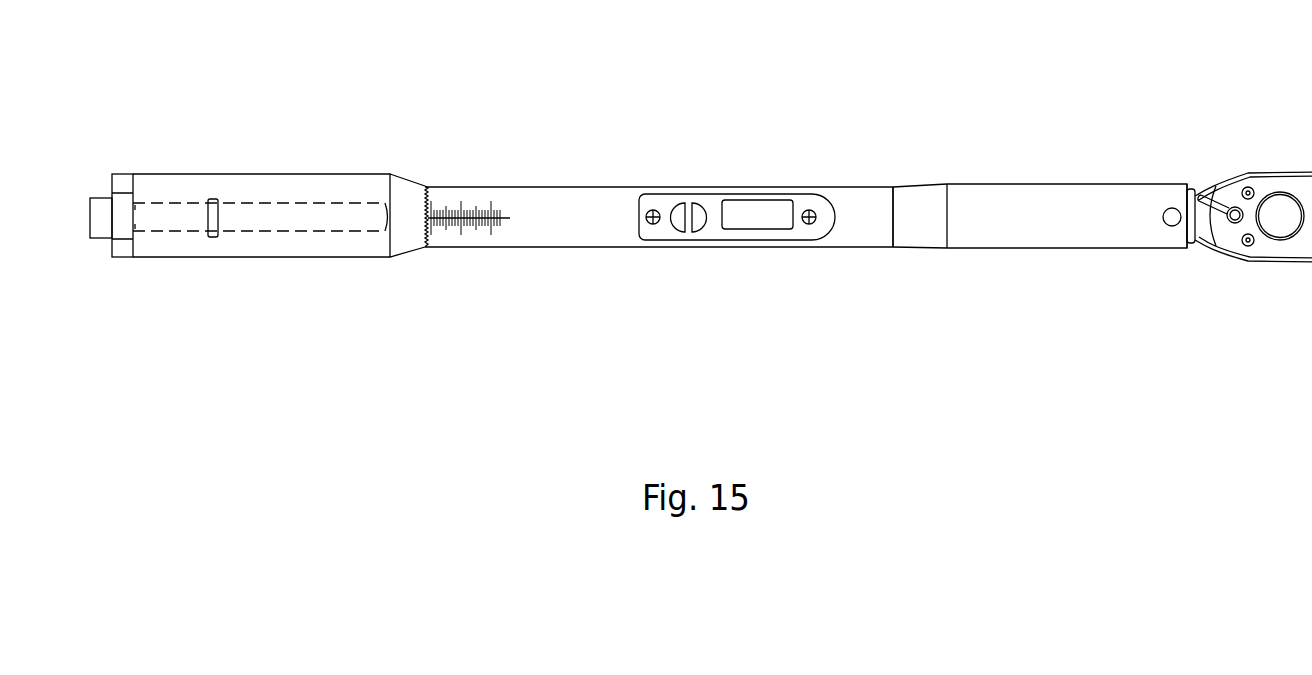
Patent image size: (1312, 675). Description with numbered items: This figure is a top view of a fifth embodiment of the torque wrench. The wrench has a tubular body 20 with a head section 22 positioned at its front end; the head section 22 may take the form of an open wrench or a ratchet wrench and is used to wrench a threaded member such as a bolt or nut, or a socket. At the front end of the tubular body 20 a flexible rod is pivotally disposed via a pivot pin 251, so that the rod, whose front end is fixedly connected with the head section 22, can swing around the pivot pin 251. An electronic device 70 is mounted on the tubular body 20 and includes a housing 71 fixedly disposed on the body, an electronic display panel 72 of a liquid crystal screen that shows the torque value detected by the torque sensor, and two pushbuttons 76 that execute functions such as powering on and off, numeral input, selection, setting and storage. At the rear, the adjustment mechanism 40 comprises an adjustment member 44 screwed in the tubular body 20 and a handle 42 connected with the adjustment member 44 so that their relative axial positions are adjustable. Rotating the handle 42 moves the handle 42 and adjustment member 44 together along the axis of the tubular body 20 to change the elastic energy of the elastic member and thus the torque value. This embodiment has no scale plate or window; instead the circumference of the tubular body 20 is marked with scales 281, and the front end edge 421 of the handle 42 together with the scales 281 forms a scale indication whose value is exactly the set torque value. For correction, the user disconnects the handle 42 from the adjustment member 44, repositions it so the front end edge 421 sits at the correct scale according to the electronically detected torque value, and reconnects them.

The adjustment mechanism 40 is at (296, 201).
The handle 42 is at (205, 250).
The adjustment member 44 is at (302, 235).
The front end edge 421 is at (437, 188).
The scales 281 is at (492, 222).
The electronic device 70 is at (757, 190).
The housing 71 is at (815, 203).
The electronic display panel 72 is at (770, 215).
The pushbutton 76 is at (674, 220).
The tubular body 20 is at (1075, 229).
The pivot pin 251 is at (1171, 218).
The head section 22 is at (1262, 260).